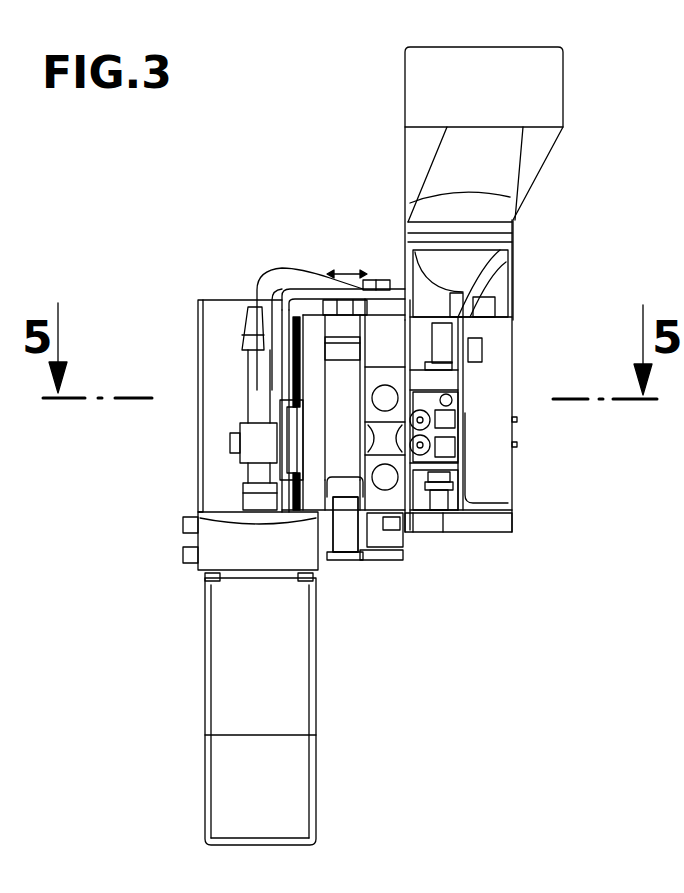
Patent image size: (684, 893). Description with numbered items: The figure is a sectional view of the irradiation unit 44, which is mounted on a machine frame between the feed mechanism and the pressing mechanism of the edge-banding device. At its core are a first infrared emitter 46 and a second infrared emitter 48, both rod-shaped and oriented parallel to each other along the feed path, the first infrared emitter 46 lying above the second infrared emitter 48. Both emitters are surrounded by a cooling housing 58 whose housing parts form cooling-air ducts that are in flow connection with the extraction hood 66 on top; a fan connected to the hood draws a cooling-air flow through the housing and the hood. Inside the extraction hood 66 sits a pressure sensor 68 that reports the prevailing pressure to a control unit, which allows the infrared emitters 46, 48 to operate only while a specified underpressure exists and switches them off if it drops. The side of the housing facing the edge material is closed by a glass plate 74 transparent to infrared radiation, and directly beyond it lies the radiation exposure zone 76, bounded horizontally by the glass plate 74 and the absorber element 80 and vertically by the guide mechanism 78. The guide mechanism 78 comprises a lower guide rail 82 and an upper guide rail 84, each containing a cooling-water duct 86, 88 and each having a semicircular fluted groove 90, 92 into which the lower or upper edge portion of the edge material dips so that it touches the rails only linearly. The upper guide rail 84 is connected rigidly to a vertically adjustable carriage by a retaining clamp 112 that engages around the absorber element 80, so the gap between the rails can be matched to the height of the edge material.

The irradiation unit 44 is at (362, 156).
The first infrared emitter 46 is at (460, 418).
The second infrared emitter 48 is at (460, 445).
The cooling housing 58 is at (487, 397).
The extraction hood 66 is at (527, 195).
The pressure sensor 68 is at (407, 253).
The glass plate 74 is at (413, 493).
The radiation exposure zone 76 is at (345, 438).
The guide mechanism 78 is at (378, 532).
The absorber element 80 is at (303, 424).
The lower guide rail 82 is at (390, 502).
The upper guide rail 84 is at (260, 345).
The cooling-water duct 86 is at (215, 520).
The cooling-water duct 88 is at (378, 372).
The fluted groove 90 is at (383, 397).
The fluted groove 92 is at (300, 470).
The retaining clamp 112 is at (277, 280).